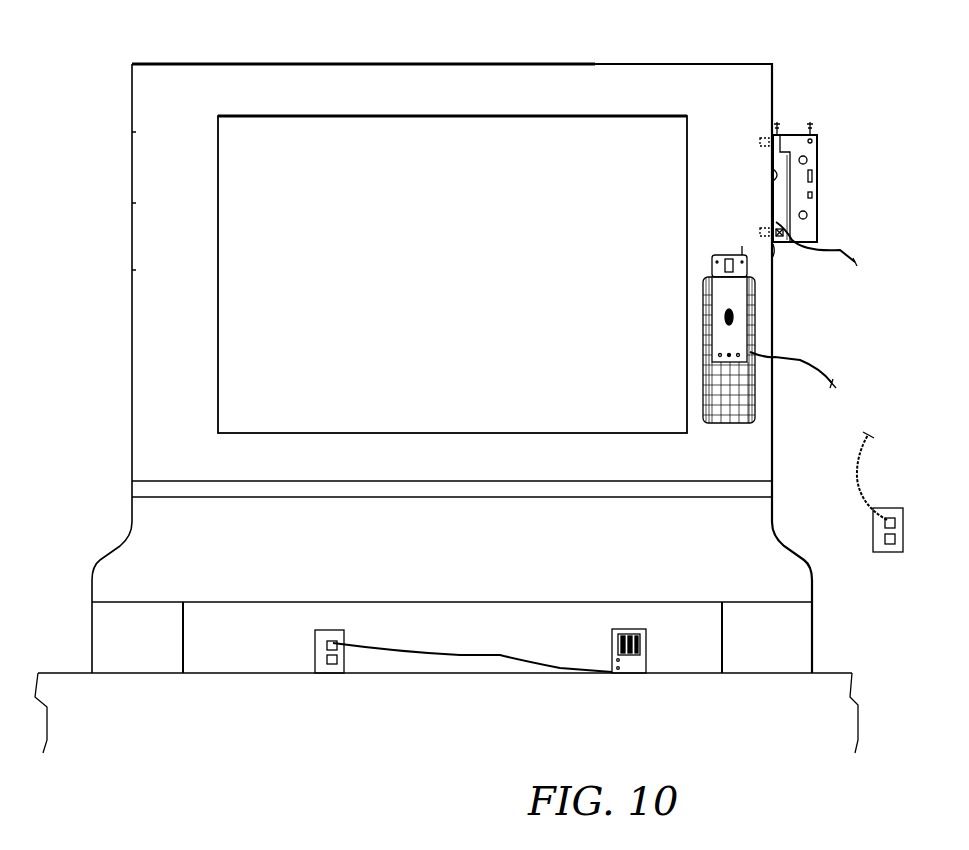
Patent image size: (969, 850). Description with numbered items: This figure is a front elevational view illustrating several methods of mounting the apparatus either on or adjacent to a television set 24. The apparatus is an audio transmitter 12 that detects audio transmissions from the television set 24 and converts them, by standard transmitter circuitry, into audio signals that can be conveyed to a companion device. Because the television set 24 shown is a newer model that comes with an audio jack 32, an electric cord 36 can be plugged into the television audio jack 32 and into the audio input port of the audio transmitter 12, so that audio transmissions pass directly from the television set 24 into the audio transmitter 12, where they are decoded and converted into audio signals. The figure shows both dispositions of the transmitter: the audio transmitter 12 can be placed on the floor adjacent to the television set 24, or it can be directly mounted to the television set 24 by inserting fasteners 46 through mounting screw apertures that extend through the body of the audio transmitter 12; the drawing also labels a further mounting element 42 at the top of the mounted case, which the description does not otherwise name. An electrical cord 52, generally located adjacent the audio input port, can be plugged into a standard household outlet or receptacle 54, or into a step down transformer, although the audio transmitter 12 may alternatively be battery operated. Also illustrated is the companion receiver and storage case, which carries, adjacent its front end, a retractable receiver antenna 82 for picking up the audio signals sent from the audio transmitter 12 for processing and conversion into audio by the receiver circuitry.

The television set 24 is at (442, 62).
The screw 42 is at (778, 122).
The retractable receiver antenna 82 is at (812, 122).
The audio transmitter 12 is at (772, 173).
The fasteners 46 is at (772, 232).
The electric cord 36 is at (790, 246).
The audio jack 32 is at (773, 258).
The electrical cord 52 is at (840, 248).
The outlet or receptacle 54 is at (873, 542).